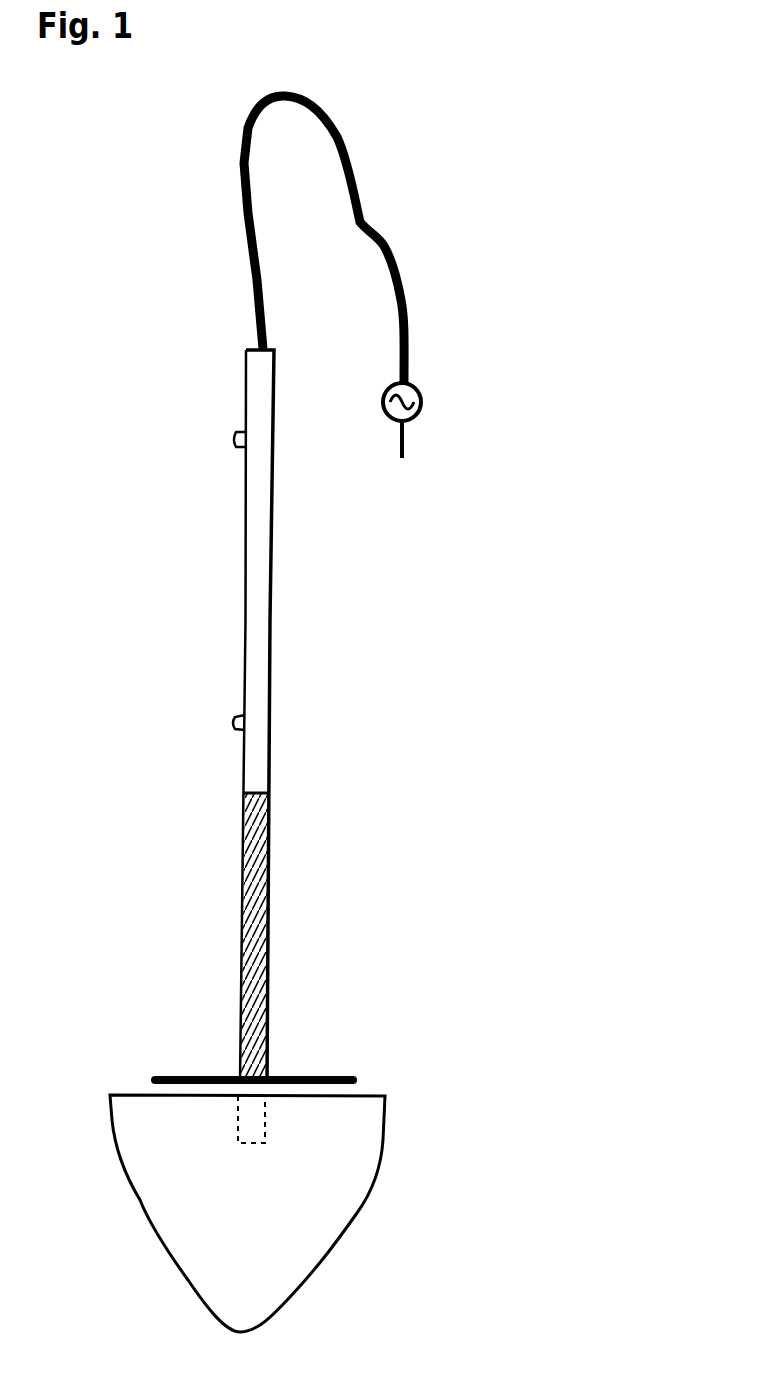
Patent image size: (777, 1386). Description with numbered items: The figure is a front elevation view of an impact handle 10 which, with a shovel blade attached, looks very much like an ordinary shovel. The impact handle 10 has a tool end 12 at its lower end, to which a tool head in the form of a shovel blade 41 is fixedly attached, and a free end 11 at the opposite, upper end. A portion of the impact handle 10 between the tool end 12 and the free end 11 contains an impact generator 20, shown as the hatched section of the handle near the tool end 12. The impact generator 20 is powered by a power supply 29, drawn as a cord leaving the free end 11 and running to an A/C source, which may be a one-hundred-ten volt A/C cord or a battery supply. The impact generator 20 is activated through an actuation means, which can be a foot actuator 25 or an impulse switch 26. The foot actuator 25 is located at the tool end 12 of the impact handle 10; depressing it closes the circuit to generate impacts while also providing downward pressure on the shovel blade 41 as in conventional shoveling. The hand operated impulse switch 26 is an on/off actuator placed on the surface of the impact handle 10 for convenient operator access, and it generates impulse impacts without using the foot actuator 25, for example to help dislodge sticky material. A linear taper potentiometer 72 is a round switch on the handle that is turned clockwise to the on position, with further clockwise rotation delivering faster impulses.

The impact handle 10 is at (464, 186).
The free end 11 is at (275, 487).
The tool end 12 is at (258, 1122).
The impact generator 20 is at (280, 995).
The foot actuator 25 is at (274, 1040).
The impulse switch 26 is at (229, 721).
The power supply 29 is at (262, 206).
The shovel blade 41 is at (199, 1220).
The linear taper potentiometer 72 is at (169, 437).